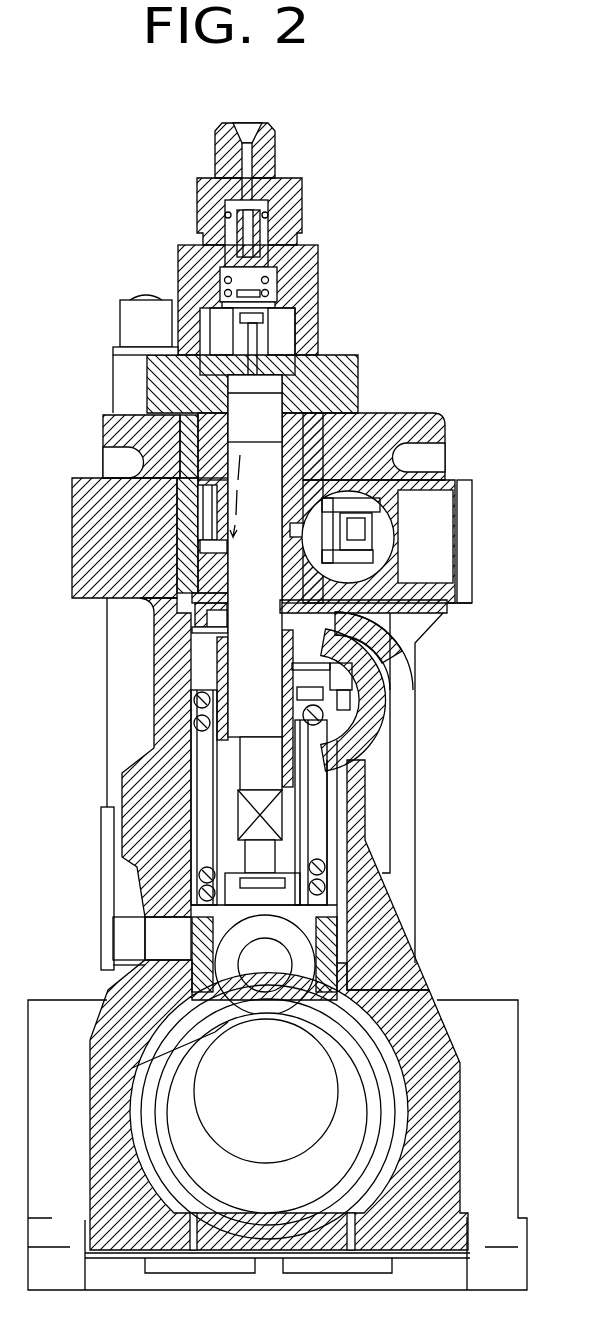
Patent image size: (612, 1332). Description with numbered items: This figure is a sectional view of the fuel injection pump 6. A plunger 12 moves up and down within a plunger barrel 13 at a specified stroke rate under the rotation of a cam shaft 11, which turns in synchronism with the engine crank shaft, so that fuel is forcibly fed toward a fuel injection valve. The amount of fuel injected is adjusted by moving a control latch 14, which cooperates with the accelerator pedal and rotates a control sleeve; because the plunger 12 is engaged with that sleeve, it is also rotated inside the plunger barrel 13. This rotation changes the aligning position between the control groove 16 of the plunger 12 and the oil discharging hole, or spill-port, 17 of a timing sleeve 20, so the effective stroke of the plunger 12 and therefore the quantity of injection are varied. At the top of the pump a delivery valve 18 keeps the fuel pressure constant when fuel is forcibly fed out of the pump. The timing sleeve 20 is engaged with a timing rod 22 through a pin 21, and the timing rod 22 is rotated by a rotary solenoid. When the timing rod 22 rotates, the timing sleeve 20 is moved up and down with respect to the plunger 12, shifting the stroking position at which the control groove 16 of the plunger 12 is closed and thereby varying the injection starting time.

The fuel injection pump 6 is at (484, 440).
The cam shaft 11 is at (284, 1106).
The plunger 12 is at (247, 662).
The plunger barrel 13 is at (393, 683).
The control latch 14 is at (348, 705).
The control groove 16 is at (236, 570).
The oil discharging hole (spill-port) 17 is at (252, 443).
The delivery valve 18 is at (272, 287).
The timing sleeve 20 is at (305, 496).
The pin 21 is at (282, 522).
The timing rod 22 is at (363, 577).